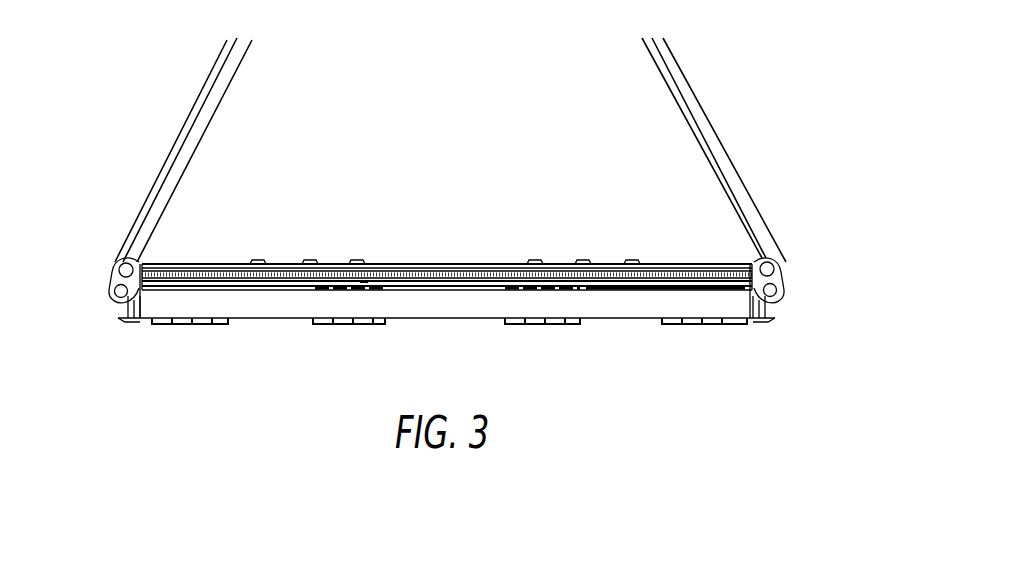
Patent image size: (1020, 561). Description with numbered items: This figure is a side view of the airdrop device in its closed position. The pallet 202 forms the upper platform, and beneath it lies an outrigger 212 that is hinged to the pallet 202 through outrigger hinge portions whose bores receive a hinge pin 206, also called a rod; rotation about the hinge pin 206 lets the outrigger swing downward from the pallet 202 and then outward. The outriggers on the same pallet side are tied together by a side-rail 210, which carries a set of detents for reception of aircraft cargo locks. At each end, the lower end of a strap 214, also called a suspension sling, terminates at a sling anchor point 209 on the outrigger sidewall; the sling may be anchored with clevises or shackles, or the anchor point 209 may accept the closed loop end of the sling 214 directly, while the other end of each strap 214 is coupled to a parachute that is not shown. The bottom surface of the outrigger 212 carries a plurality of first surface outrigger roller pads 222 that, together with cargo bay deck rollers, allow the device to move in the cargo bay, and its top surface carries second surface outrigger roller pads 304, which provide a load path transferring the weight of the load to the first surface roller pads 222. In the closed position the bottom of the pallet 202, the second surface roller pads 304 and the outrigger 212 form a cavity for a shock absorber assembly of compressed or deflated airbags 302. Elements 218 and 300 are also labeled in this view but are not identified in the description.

The pallet 202 is at (442, 262).
The hinge pin 206 is at (132, 262).
The sling anchor point 209 is at (140, 297).
The side-rail 210 is at (114, 292).
The outrigger 212 is at (628, 302).
The strap 214 is at (672, 58).
The standoff 218 is at (581, 262).
The first surface outrigger roller pads 222 is at (352, 325).
The foot pad 300 is at (718, 325).
The compressed/deflated airbags 302 is at (655, 283).
The second surface outrigger roller pads 304 is at (363, 290).